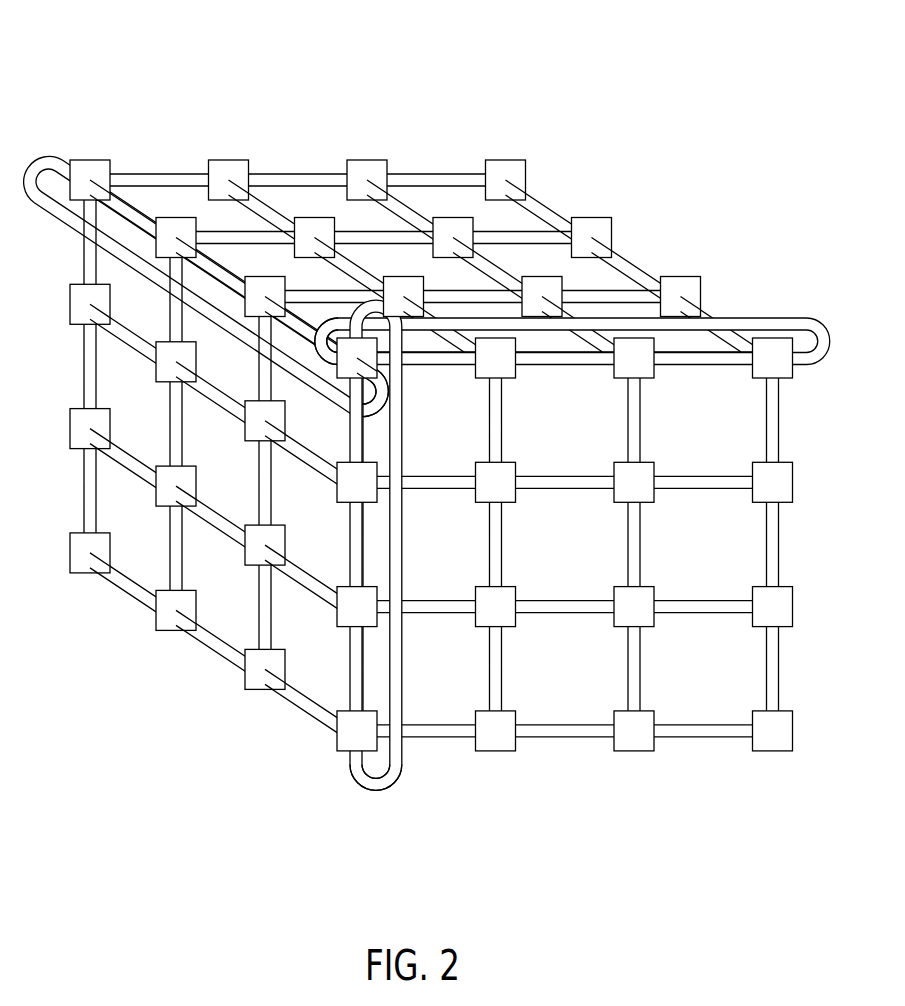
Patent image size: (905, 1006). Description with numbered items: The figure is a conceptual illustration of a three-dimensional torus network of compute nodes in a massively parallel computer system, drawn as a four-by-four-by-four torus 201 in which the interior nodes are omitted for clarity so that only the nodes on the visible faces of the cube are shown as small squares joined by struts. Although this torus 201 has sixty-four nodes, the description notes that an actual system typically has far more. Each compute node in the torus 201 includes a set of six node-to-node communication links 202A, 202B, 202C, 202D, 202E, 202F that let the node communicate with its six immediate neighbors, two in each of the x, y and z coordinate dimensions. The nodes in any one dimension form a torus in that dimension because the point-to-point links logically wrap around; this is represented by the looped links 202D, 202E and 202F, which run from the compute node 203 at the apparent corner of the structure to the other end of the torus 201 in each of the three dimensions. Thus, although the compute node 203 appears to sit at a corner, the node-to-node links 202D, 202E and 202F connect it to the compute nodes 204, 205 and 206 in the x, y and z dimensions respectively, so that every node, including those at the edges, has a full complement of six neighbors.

The torus 201 is at (427, 430).
The node-to-node communication link 202A is at (419, 366).
The node-to-node communication link 202B is at (362, 440).
The node-to-node communication link 202C is at (292, 325).
The node-to-node communication link 202D is at (793, 318).
The node-to-node communication link 202E is at (376, 793).
The node-to-node communication link 202F is at (36, 156).
The compute node 203 is at (335, 380).
The compute node 204 is at (97, 160).
The compute node 205 is at (792, 372).
The compute node 206 is at (337, 741).